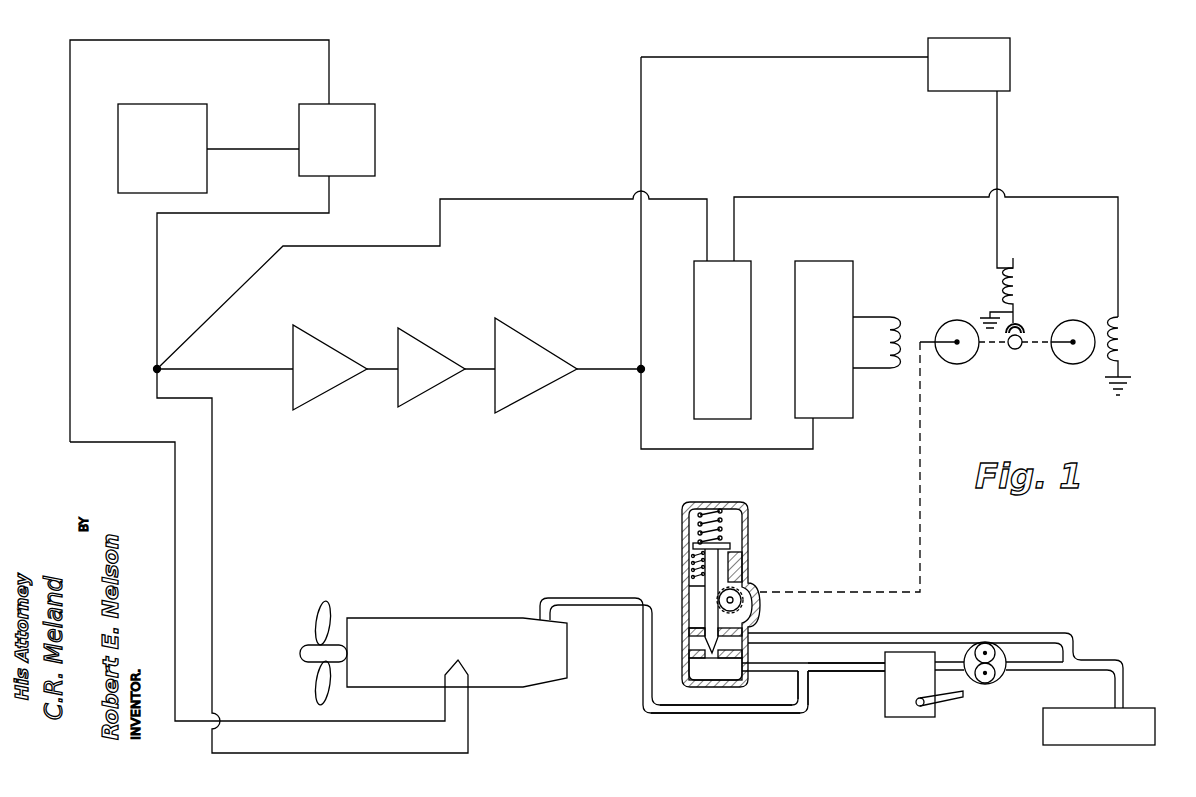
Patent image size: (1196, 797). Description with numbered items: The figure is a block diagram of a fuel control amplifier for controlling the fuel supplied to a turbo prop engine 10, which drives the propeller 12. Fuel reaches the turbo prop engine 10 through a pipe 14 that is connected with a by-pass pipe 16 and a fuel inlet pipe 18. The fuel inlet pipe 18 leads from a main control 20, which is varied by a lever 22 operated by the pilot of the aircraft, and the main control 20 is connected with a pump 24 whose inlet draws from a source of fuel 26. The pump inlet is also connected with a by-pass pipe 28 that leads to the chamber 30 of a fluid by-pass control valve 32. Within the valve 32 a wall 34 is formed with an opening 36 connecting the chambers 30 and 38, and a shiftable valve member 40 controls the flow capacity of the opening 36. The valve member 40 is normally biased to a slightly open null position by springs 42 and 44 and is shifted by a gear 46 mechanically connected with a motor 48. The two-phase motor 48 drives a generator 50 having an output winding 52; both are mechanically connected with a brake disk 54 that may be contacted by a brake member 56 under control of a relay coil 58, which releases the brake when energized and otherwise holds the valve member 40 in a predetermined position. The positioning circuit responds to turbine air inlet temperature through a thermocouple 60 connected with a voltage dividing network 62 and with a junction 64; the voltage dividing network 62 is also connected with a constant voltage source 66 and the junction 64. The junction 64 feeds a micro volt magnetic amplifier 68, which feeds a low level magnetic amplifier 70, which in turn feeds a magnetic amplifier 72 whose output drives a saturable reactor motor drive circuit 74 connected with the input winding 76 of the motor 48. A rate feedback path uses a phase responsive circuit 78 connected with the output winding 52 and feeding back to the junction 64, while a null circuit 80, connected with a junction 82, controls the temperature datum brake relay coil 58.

The turbo prop engine 10 is at (388, 618).
The propeller 12 is at (325, 612).
The pipe 14 is at (810, 703).
The by-pass pipe 16 is at (782, 672).
The fuel inlet pipe 18 is at (858, 667).
The main control 20 is at (910, 660).
The lever 22 is at (945, 700).
The pump 24 is at (997, 680).
The source of fuel 26 is at (1043, 732).
The by-pass pipe 28 is at (1038, 633).
The chamber 30 is at (698, 605).
The fluid by-pass control valve 32 is at (748, 525).
The wall 34 is at (738, 655).
The opening 36 is at (713, 660).
The chamber 38 is at (708, 673).
The shiftable valve member 40 is at (712, 555).
The spring 42 is at (704, 508).
The spring 44 is at (693, 560).
The gear 46 is at (734, 600).
The motor 48 is at (940, 333).
The generator 50 is at (1068, 328).
The output winding 52 is at (1125, 340).
The brake disk 54 is at (1018, 352).
The brake member 56 is at (1023, 330).
The relay coil 58 is at (1006, 290).
The thermocouple 60 is at (468, 675).
The voltage dividing network 62 is at (365, 125).
The junction 64 is at (155, 369).
The constant voltage source 66 is at (199, 126).
The micro volt magnetic amplifier 68 is at (323, 382).
The low level magnetic amplifier 70 is at (420, 380).
The magnetic amplifier 72 is at (528, 381).
The saturable reactor motor drive circuit 74 is at (812, 270).
The input winding 76 is at (886, 330).
The phase responsive circuit 78 is at (702, 295).
The null circuit 80 is at (983, 48).
The junction 82 is at (641, 365).